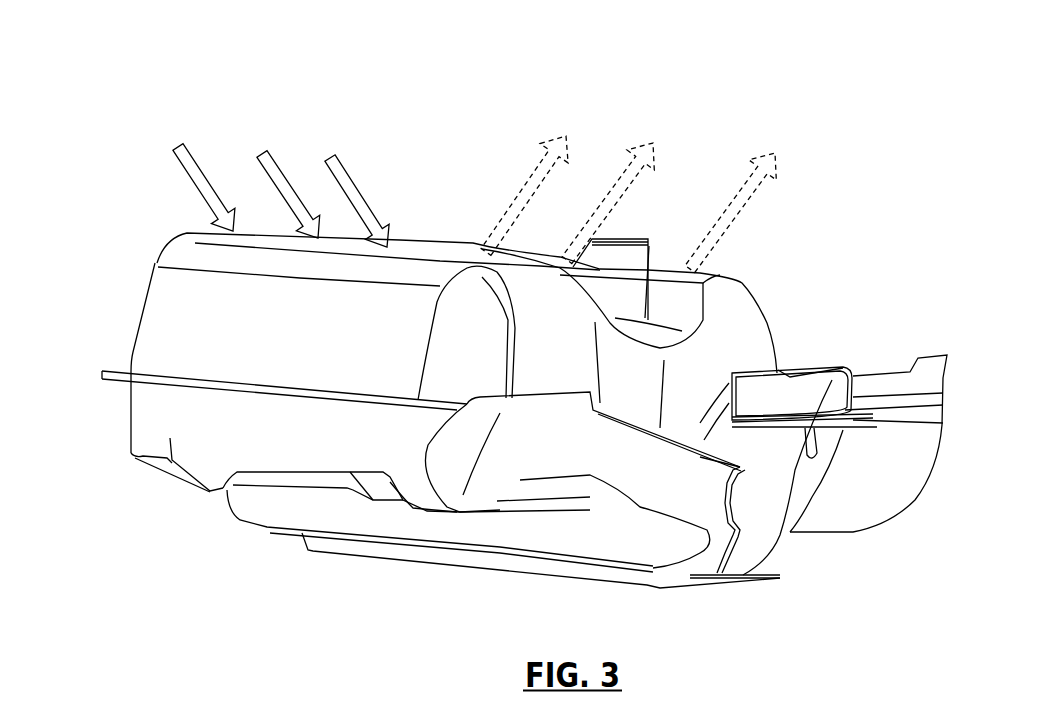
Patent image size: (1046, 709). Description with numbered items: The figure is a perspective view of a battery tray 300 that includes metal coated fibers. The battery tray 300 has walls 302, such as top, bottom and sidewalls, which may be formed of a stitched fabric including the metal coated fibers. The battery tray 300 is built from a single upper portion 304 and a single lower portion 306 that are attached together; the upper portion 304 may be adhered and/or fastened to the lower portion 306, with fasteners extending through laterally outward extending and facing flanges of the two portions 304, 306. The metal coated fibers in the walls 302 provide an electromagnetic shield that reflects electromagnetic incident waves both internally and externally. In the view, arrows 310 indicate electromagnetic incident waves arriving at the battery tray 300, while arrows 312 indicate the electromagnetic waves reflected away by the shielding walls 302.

The battery tray 300 is at (167, 101).
The walls 302 is at (457, 256).
The upper portion 304 is at (173, 352).
The lower portion 306 is at (140, 468).
The arrows 310 is at (337, 160).
The arrows 312 is at (752, 158).